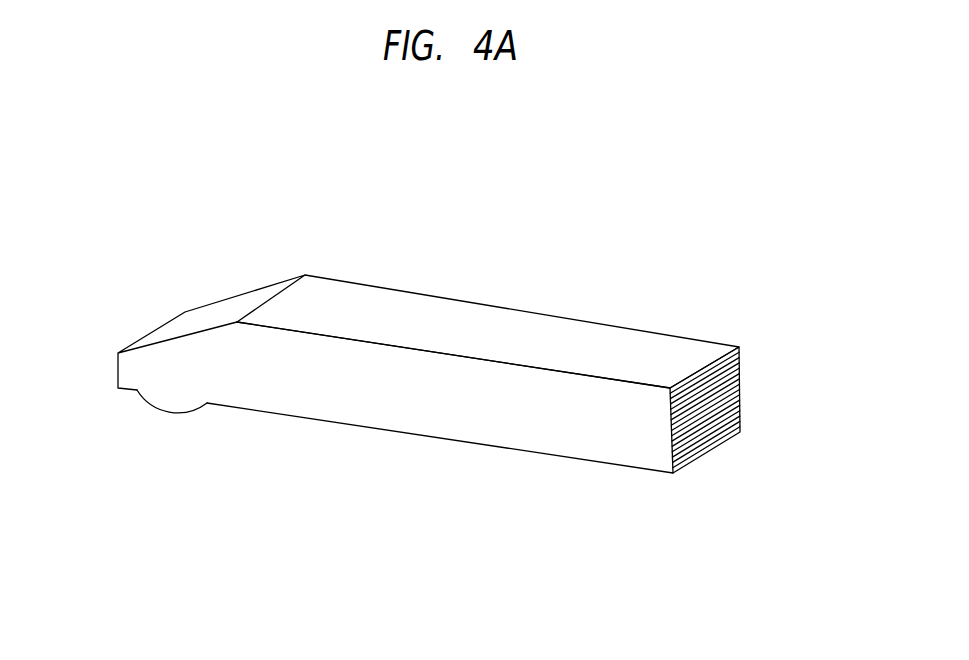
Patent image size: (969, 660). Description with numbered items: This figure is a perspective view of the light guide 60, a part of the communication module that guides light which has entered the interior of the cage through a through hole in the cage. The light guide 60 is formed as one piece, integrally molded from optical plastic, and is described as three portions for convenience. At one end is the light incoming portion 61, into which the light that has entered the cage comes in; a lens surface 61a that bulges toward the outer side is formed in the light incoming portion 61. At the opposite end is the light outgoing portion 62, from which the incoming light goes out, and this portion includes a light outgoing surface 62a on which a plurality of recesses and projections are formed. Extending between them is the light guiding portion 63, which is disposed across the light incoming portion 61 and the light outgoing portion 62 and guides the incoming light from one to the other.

The light guide 60 is at (440, 357).
The light incoming portion 61 is at (130, 431).
The lens surface 61a is at (177, 413).
The light outgoing portion 62 is at (726, 467).
The light outgoing surface 62a is at (742, 398).
The light guiding portion 63 is at (426, 296).